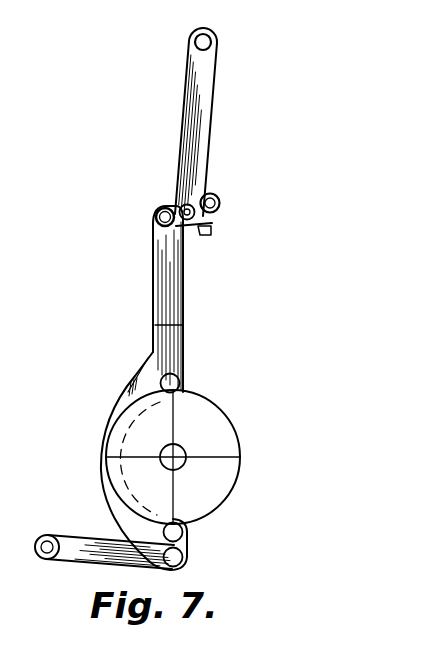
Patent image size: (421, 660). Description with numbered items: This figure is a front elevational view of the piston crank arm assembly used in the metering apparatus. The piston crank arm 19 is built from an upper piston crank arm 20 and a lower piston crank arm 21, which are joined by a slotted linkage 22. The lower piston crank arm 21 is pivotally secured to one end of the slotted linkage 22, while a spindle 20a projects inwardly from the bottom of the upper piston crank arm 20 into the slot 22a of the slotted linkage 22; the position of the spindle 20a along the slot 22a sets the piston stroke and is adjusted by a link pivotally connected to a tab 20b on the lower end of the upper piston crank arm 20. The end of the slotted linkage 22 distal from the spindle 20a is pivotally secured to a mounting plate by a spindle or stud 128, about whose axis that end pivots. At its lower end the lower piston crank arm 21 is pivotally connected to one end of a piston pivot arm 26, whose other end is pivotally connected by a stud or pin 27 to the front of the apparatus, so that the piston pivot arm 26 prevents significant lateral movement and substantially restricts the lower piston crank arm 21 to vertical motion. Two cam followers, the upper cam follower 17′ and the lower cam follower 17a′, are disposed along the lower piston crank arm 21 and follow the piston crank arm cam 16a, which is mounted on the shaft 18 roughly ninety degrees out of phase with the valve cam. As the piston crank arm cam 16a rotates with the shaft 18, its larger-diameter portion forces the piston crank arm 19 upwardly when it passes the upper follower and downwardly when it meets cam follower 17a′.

The upper piston crank arm 20 is at (185, 104).
The spindle 20a is at (202, 214).
The tab 20b is at (208, 231).
The slotted linkage 22 is at (176, 205).
The slot 22a is at (207, 197).
The spindle or stud 128 is at (214, 208).
The piston crank arm 19 is at (150, 257).
The lower piston crank arm 21 is at (151, 347).
The cam follower 17′ is at (181, 376).
The piston crank arm cam 16a is at (240, 460).
The shaft 18 is at (186, 451).
The cam follower 17a′ is at (184, 532).
The piston pivot arm 26 is at (87, 537).
The stud or pin 27 is at (42, 557).